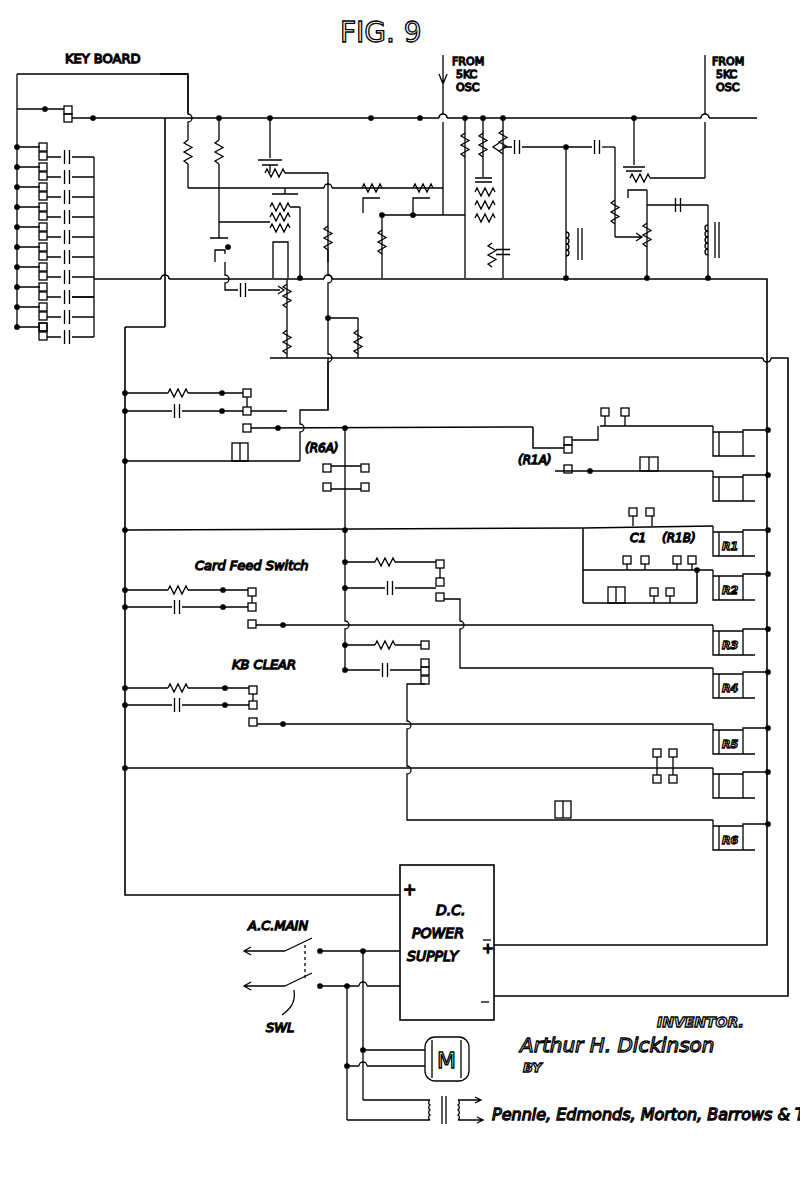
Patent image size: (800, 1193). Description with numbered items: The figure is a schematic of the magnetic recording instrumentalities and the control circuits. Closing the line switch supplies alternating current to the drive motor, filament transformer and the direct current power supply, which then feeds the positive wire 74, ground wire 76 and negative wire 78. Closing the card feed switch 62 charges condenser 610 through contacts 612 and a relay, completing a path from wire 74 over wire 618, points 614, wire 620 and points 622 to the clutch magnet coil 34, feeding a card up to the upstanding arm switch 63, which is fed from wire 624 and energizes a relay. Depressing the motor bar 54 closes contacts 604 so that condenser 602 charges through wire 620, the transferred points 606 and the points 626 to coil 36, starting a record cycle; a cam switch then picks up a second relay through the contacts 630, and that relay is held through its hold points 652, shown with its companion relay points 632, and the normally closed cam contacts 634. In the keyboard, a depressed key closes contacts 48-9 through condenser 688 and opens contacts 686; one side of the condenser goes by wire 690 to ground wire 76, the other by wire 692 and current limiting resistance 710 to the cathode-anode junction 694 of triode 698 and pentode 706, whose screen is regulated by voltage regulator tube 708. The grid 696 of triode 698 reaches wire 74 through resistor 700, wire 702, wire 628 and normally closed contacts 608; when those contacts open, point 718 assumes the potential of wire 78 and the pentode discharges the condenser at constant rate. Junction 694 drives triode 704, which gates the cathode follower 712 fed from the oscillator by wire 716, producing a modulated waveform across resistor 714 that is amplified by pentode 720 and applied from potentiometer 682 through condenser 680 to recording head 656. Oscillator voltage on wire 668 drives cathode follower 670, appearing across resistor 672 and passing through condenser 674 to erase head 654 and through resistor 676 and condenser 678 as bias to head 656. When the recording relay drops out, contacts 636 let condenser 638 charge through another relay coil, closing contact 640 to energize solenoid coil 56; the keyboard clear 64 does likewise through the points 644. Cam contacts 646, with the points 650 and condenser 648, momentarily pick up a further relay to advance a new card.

The positive wire 74 is at (565, 109).
The ground wire 76 is at (536, 282).
The negative wire 78 is at (510, 358).
The wire 692 is at (188, 96).
The contacts 686 is at (70, 106).
The wire 690 is at (96, 226).
The condenser 688 is at (81, 296).
The contacts 48-9 is at (43, 332).
The current limiting resistance 710 is at (177, 152).
The wire 716 is at (446, 103).
The triode 704 is at (383, 179).
The cathode follower 712 is at (432, 189).
The cathode resistor 714 is at (386, 244).
The resistor 700 is at (330, 233).
The wire 702 is at (330, 261).
The grid 696 is at (280, 164).
The triode 698 is at (264, 185).
The cathode-anode junction 694 is at (270, 197).
The pentode 706 is at (262, 230).
The voltage regulator tube 708 is at (210, 246).
The point 718 is at (326, 318).
The potentiometer 682 is at (502, 161).
The condenser 680 is at (520, 144).
The condenser 678 is at (606, 136).
The linear amplifier pentode 720 is at (500, 206).
The recording head 656 is at (547, 212).
The resistor 676 is at (612, 208).
The cathode follower 670 is at (644, 168).
The wire 668 is at (705, 90).
The resistor 672 is at (650, 246).
The condenser 674 is at (696, 198).
The erase head 654 is at (750, 262).
The motor bar 54 is at (278, 400).
The condenser 602 is at (172, 427).
The contacts 604 is at (240, 422).
The wire 628 is at (334, 393).
The wire 620 is at (416, 428).
The contacts 608 is at (211, 464).
The points 614 is at (368, 475).
The contacts 652 is at (300, 488).
The wire 618 is at (262, 529).
The wire 624 is at (428, 528).
The upstanding arm switch 63 is at (640, 506).
The R1A points 606 is at (572, 450).
The points 622 is at (622, 398).
The R3B points 626 is at (622, 492).
The R1B contacts 630 is at (715, 558).
The C2 contacts 634 is at (582, 599).
The relay contact R2B 632 is at (670, 612).
The card feed switch 62 is at (289, 596).
The condenser 610 is at (185, 614).
The contacts 612 is at (244, 624).
The contacts 636 is at (464, 576).
The condenser 638 is at (390, 606).
The R1C points 650 is at (442, 692).
The condenser 648 is at (384, 680).
The keyboard clear 64 is at (286, 696).
The contact 640 is at (642, 750).
The R5A points 644 is at (652, 792).
The contacts 646 is at (560, 830).
The clutch magnet coil 34 is at (741, 441).
The coil 36 is at (741, 486).
The solenoid coil 56 is at (741, 783).